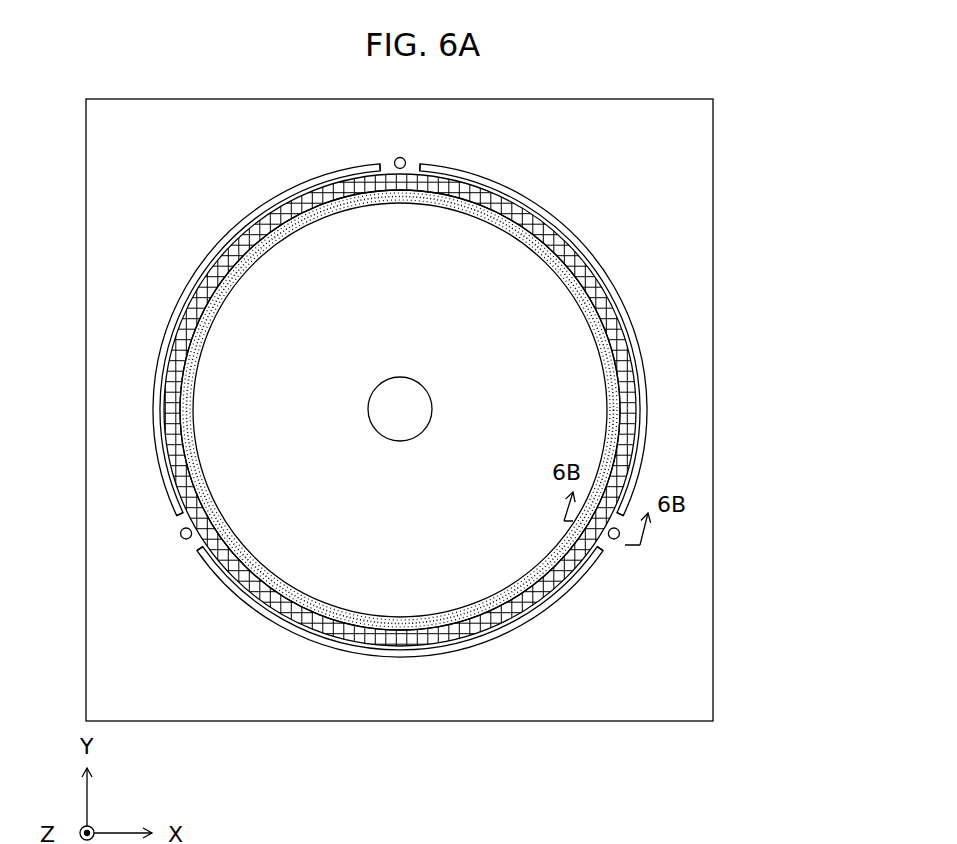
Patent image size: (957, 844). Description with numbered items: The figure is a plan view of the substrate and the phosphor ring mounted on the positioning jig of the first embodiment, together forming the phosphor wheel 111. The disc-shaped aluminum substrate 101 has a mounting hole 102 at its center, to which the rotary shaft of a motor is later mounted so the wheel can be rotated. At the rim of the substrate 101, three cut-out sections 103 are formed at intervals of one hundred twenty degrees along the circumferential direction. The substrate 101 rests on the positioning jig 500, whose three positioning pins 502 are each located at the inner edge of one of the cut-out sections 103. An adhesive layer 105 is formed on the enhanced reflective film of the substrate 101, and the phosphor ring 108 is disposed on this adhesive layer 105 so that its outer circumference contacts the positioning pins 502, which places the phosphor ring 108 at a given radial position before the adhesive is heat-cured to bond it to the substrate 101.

The substrate 101 is at (190, 272).
The mounting hole 102 is at (386, 380).
The cut-out section 103 is at (417, 160).
The adhesive layer 105 is at (188, 455).
The phosphor ring 108 is at (247, 222).
The phosphor wheel 111 is at (606, 233).
The positioning jig 500 is at (713, 335).
The positioning pin 502 is at (395, 157).